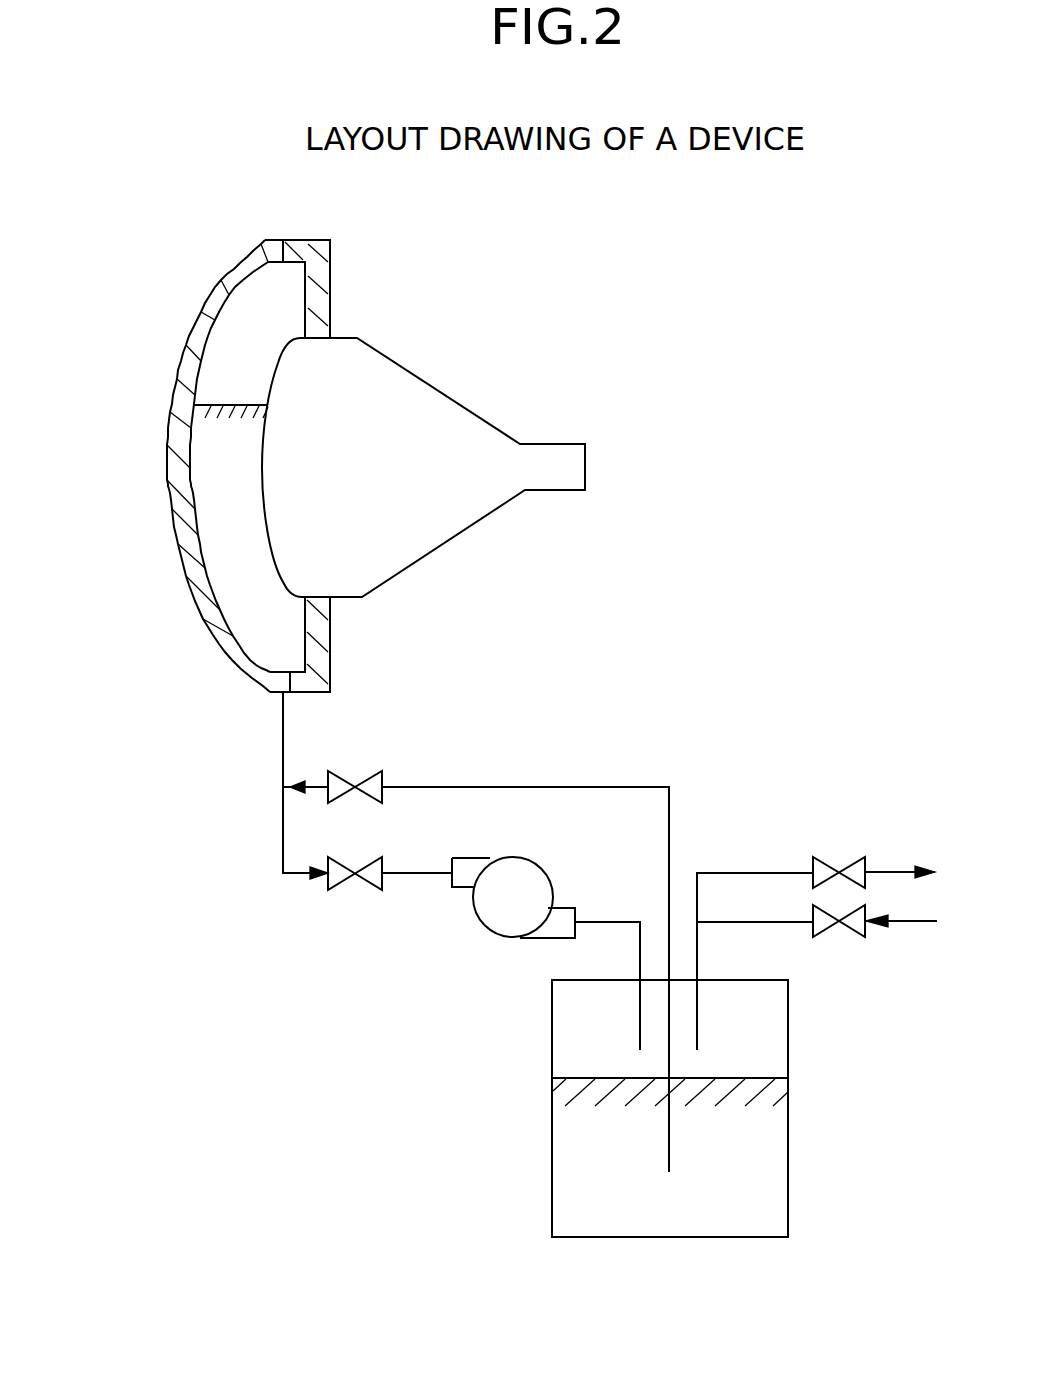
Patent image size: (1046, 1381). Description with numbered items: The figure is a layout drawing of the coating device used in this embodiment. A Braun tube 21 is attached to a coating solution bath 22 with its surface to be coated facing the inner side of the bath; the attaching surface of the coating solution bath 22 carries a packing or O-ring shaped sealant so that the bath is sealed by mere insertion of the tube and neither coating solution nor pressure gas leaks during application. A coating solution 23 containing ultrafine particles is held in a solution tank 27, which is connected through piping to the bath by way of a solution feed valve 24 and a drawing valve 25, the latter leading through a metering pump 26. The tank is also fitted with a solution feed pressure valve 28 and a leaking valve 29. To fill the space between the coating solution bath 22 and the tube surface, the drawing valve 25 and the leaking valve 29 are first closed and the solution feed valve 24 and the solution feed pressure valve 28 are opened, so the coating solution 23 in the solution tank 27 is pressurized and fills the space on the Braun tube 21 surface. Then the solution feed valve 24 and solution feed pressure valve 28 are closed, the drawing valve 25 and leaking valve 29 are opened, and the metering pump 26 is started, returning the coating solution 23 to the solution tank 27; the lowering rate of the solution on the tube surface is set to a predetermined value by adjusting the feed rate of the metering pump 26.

The Braun tube 21 is at (390, 358).
The coating solution bath 22 is at (178, 550).
The coating solution 23 is at (213, 442).
The solution feed valve 24 is at (367, 770).
The drawing valve 25 is at (348, 888).
The metering pump 26 is at (518, 885).
The solution tank 27 is at (758, 1147).
The solution feed pressure valve 28 is at (822, 935).
The leaking valve 29 is at (822, 860).